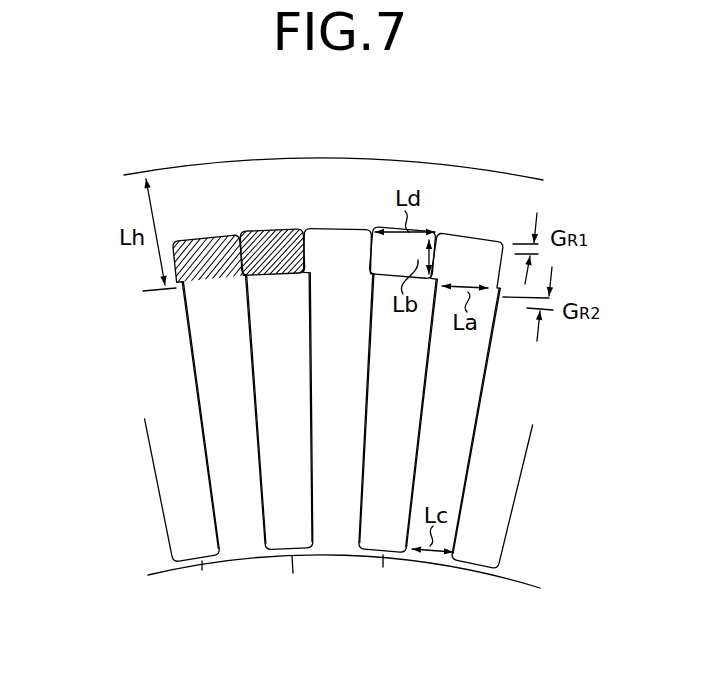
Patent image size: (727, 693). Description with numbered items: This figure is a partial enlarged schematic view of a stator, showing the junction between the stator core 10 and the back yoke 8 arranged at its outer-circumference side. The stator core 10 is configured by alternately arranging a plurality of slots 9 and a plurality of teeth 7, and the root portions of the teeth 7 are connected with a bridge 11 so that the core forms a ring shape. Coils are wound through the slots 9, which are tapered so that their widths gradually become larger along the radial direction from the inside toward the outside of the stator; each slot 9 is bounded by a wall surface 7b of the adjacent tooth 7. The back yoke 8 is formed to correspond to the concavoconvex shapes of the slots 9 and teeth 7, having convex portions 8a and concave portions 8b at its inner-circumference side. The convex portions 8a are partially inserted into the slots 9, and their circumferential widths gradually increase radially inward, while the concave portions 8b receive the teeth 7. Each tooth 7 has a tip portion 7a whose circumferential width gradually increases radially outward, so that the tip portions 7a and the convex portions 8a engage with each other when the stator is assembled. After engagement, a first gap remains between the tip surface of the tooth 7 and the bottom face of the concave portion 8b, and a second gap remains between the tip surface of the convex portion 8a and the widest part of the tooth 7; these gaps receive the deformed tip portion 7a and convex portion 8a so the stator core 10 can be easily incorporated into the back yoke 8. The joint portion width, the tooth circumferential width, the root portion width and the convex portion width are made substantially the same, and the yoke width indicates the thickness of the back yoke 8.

The tooth 7 is at (437, 463).
The tip portion 7a is at (203, 276).
The wall surface 7b is at (258, 404).
The back yoke 8 is at (510, 171).
The convex portion 8a is at (275, 250).
The concave portion 8b is at (208, 238).
The slot 9 is at (387, 502).
The stator core 10 is at (186, 575).
The bridge 11 is at (383, 565).